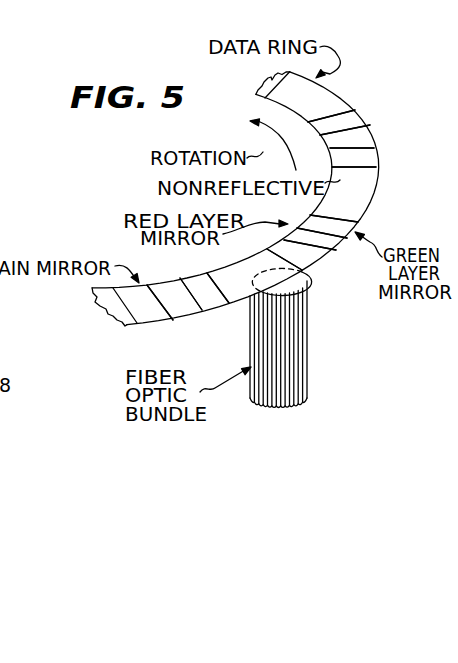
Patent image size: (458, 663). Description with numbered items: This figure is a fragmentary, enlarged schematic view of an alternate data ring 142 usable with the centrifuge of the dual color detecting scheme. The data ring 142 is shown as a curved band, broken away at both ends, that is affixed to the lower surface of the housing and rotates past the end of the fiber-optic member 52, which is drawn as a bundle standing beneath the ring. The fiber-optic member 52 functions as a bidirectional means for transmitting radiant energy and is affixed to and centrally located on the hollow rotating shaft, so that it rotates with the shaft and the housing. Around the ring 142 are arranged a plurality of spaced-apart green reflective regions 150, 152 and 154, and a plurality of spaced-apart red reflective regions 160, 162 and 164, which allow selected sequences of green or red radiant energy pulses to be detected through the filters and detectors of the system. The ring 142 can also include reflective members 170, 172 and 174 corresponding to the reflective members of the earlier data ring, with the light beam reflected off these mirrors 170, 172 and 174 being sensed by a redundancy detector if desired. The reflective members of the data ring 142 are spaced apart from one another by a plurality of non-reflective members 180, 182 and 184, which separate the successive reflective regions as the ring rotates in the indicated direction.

The data ring 142 is at (138, 190).
The fiber-optic member 52 is at (308, 357).
The non-reflective member 184 is at (337, 95).
The green reflective region 154 is at (355, 112).
The red reflective region 164 is at (373, 130).
The reflective member 174 is at (375, 150).
The non-reflective member 182 is at (376, 186).
The green reflective region 152 is at (358, 222).
The red reflective region 162 is at (342, 246).
The reflective member 172 is at (316, 263).
The non-reflective member 180 is at (243, 258).
The green reflective region 150 is at (208, 316).
The red reflective region 160 is at (187, 317).
The reflective member 170 is at (157, 321).